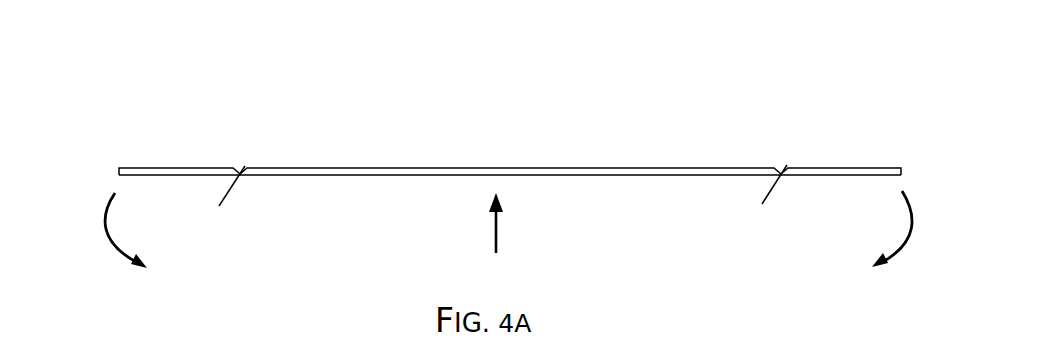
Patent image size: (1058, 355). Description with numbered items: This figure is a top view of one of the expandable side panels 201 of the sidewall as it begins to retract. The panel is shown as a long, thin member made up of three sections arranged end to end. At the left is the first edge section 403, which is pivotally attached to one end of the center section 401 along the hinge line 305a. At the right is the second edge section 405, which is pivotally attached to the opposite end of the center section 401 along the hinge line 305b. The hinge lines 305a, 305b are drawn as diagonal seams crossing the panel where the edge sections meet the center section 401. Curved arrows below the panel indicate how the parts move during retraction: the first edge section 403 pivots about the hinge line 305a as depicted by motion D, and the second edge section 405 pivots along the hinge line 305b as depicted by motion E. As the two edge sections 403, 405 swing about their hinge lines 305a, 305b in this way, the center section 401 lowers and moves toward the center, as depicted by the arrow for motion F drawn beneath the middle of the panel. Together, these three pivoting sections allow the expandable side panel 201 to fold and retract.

The expandable side panels 201 is at (124, 39).
The center section 401 is at (514, 168).
The first edge section 403 is at (197, 168).
The second edge section 405 is at (847, 168).
The hinge line 305a is at (219, 206).
The hinge line 305b is at (762, 204).
The motion D is at (104, 210).
The motion E is at (914, 210).
The motion F is at (495, 237).